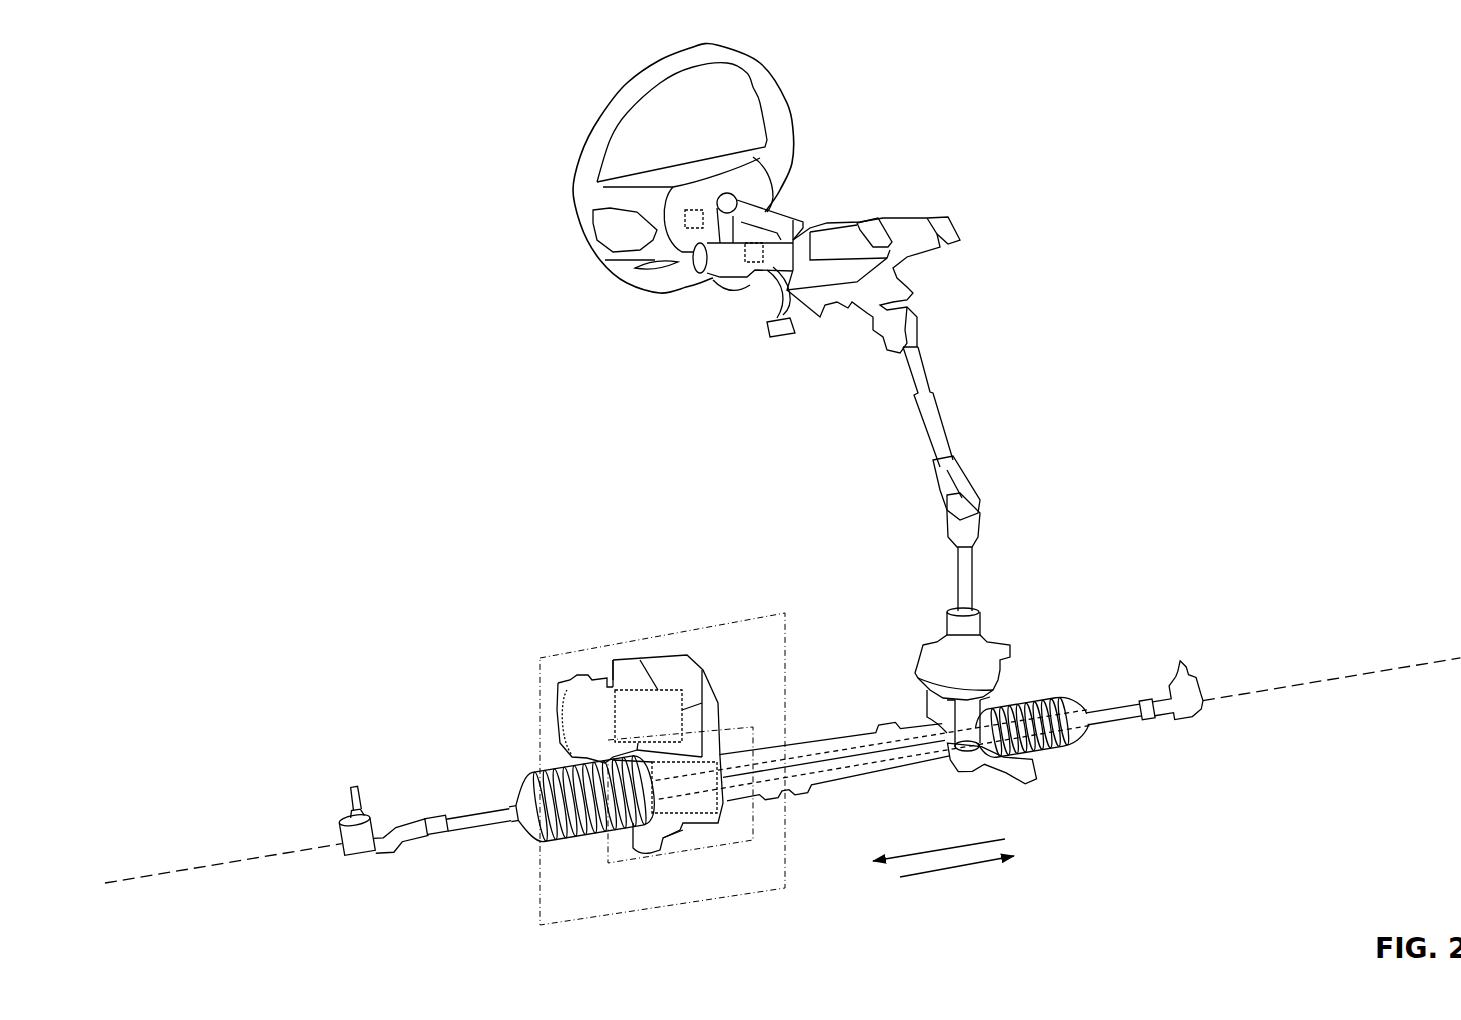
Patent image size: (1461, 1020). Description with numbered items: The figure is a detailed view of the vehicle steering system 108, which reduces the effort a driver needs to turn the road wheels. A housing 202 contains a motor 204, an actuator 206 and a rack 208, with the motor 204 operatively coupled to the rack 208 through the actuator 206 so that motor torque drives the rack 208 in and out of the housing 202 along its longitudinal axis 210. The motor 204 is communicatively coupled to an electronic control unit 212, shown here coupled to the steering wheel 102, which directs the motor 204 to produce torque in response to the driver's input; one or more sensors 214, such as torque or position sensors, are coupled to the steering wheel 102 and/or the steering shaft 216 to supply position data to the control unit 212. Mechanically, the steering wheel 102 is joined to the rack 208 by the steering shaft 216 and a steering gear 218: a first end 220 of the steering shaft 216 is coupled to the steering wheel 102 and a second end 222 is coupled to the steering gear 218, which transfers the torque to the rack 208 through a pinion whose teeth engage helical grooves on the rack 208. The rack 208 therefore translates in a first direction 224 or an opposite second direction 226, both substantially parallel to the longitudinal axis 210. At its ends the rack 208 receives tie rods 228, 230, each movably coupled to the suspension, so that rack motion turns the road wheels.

The steering wheel 102 is at (572, 237).
The steering system 108 is at (308, 124).
The housing 202 is at (650, 657).
The motor 204 is at (587, 661).
The actuator 206 is at (726, 830).
The rack 208 is at (822, 771).
The longitudinal axis 210 is at (186, 866).
The electronic control unit 212 is at (697, 210).
The sensor 214 is at (757, 265).
The steering shaft 216 is at (950, 434).
The steering gear 218 is at (1038, 662).
The first end 220 is at (917, 320).
The second end 222 is at (973, 597).
The first direction 224 is at (962, 838).
The second direction 226 is at (980, 868).
The tie rod 228 is at (1130, 730).
The tie rod 230 is at (468, 830).